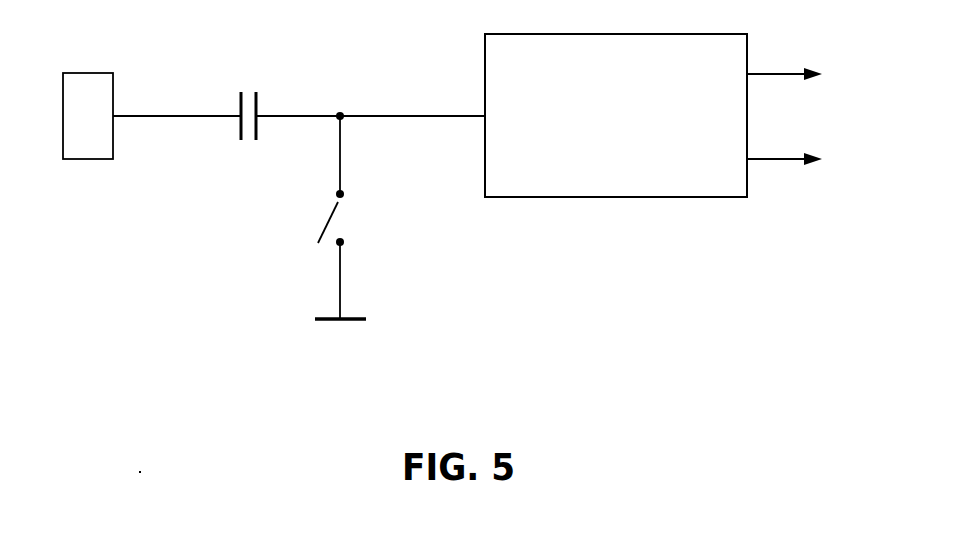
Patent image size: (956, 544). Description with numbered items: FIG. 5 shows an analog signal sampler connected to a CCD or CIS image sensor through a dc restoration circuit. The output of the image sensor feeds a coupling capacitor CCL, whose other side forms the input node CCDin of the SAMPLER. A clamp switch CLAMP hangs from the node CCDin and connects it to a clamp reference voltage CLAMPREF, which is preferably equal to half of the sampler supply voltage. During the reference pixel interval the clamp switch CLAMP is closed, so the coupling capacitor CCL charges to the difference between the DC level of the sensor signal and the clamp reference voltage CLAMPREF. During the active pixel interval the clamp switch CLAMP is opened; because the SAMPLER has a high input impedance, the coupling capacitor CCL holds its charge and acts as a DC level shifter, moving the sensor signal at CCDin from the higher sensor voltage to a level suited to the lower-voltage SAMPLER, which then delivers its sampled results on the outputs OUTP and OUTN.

The coupling capacitor CCL is at (264, 93).
The CCD in signal CCDin is at (370, 96).
The clamp switch CLAMP is at (374, 181).
The clamp reference voltage CLAMPREF is at (340, 306).
The analog signal sampler SAMPLER is at (616, 115).
The positive output OUTP is at (806, 58).
The negative output OUTN is at (806, 140).